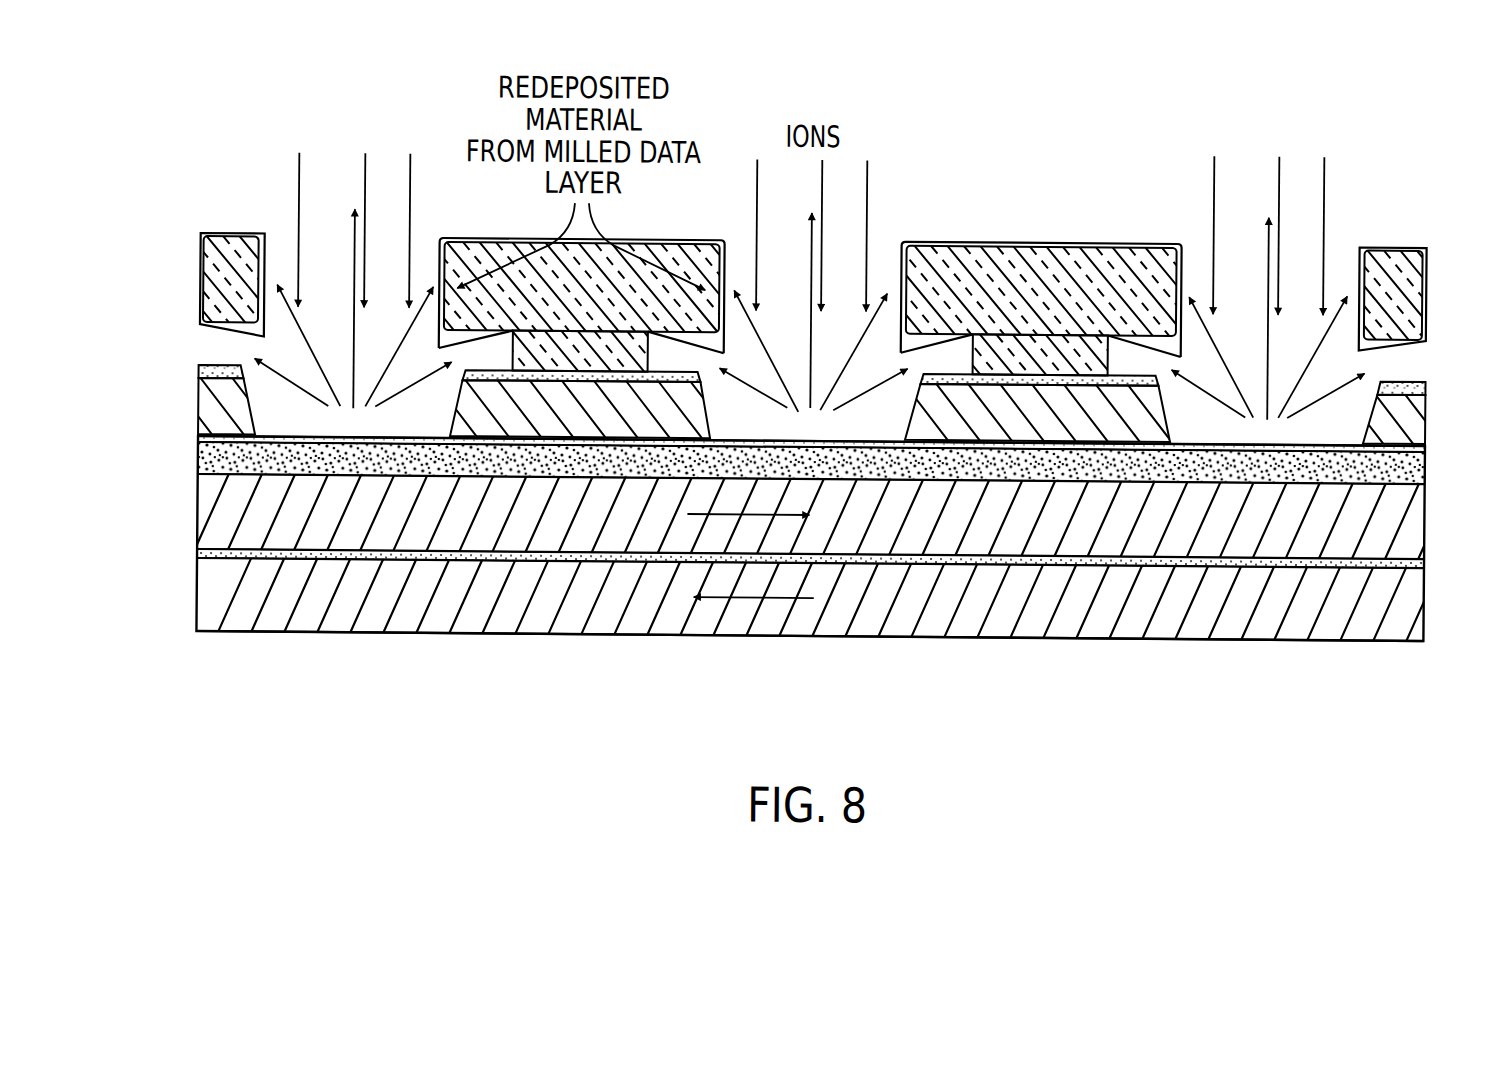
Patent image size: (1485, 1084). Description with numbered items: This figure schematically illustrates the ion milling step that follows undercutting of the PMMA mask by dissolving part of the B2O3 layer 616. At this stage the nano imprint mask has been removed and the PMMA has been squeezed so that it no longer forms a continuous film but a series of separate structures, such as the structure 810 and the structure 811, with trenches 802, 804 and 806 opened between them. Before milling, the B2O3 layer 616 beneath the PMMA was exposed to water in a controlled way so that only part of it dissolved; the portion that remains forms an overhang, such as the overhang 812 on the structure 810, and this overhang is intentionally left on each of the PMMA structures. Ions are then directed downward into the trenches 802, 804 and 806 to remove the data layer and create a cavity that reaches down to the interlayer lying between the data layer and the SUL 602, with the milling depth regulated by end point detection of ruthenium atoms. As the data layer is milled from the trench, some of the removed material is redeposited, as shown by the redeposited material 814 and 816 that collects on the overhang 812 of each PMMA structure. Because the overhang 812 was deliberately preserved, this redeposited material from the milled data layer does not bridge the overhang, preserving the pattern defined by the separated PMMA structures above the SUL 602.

The SUL 602 is at (182, 472).
The B2O3 layer 616 is at (510, 338).
The trench 802 is at (412, 400).
The trench 804 is at (873, 403).
The trench 806 is at (1333, 404).
The PMMA structure 810 is at (1110, 236).
The PMMA structure 811 is at (1400, 238).
The overhang 812 is at (938, 386).
The redeposited material 814 is at (897, 266).
The redeposited material 816 is at (723, 266).